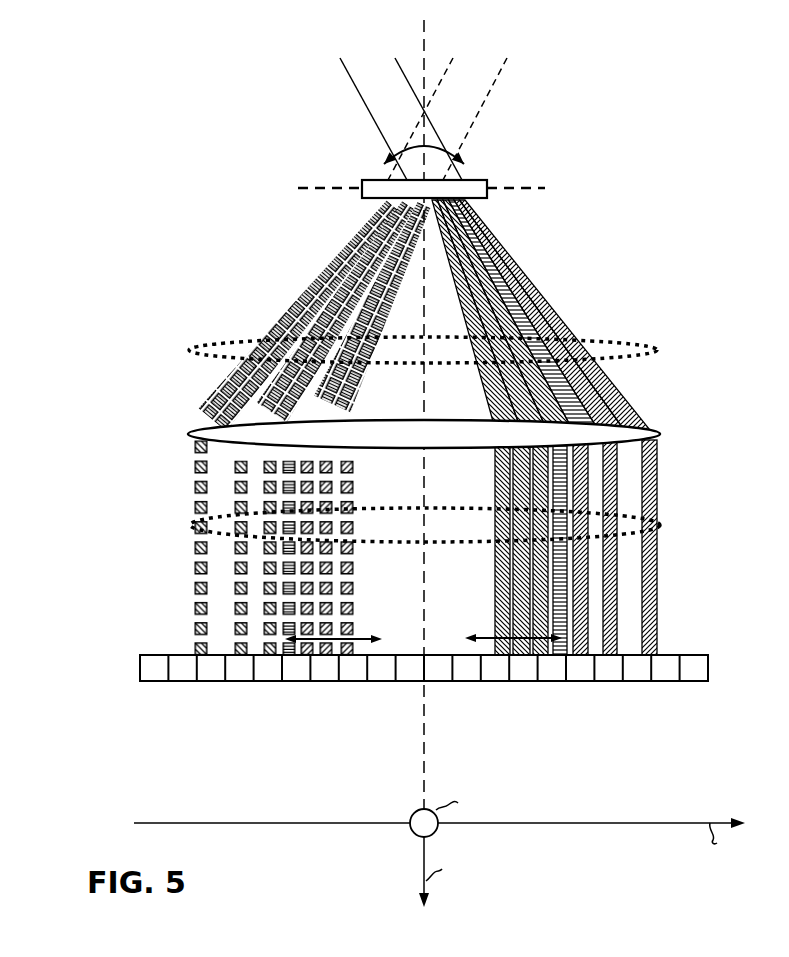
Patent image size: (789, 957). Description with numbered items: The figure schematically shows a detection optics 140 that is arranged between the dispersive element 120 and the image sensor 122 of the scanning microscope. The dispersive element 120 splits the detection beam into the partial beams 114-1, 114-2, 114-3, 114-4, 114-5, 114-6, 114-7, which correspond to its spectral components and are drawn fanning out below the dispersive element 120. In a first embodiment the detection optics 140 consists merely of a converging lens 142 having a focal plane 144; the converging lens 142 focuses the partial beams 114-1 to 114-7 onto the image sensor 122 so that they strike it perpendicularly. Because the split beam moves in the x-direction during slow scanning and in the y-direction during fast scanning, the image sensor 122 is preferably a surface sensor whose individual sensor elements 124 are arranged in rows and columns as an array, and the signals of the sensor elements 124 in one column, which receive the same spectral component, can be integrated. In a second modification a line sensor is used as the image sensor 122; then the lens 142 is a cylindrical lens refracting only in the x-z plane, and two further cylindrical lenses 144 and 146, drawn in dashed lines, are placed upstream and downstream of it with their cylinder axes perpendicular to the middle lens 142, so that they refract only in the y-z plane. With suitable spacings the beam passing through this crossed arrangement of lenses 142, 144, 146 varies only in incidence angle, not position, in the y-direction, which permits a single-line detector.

The detection optics 140 is at (638, 157).
The dispersive element 120 is at (484, 181).
The focal plane / cylindrical lens 144 is at (325, 188).
The converging lens 142 is at (188, 432).
The cylindrical lens 146 is at (190, 523).
The partial beam 114-1 is at (503, 253).
The partial beam 114-2 is at (503, 276).
The partial beam 114-3 is at (522, 315).
The partial beam 114-4 is at (563, 482).
The partial beam 114-5 is at (543, 557).
The partial beam 114-6 is at (525, 575).
The partial beam 114-7 is at (500, 590).
The sensor elements 124 is at (153, 670).
The image sensor 122 is at (357, 692).